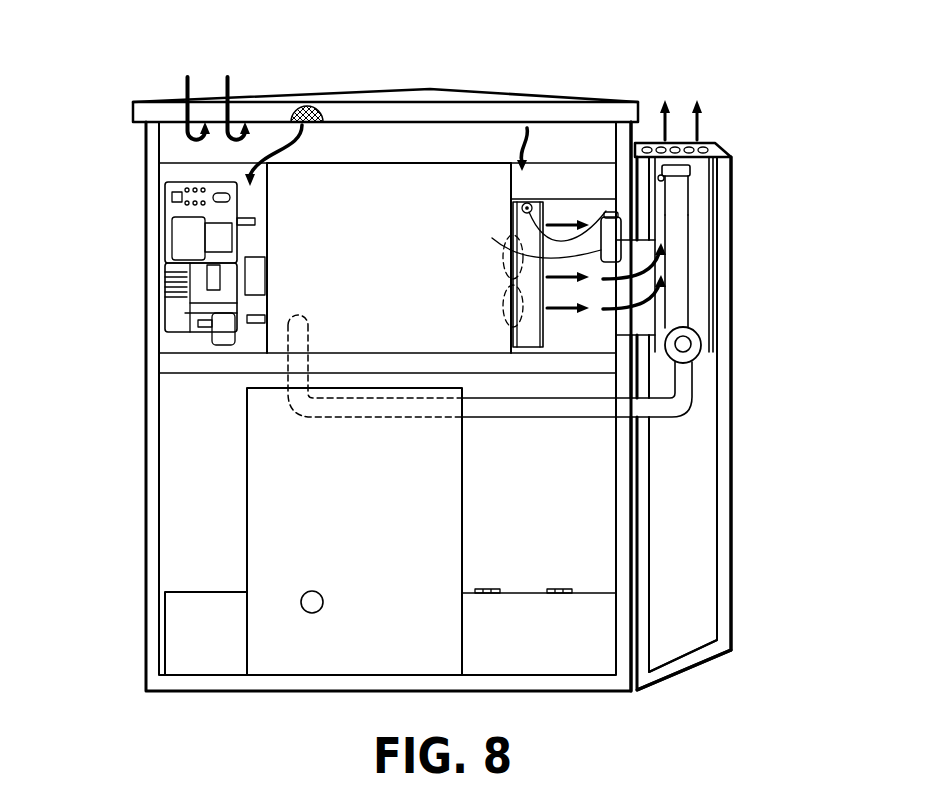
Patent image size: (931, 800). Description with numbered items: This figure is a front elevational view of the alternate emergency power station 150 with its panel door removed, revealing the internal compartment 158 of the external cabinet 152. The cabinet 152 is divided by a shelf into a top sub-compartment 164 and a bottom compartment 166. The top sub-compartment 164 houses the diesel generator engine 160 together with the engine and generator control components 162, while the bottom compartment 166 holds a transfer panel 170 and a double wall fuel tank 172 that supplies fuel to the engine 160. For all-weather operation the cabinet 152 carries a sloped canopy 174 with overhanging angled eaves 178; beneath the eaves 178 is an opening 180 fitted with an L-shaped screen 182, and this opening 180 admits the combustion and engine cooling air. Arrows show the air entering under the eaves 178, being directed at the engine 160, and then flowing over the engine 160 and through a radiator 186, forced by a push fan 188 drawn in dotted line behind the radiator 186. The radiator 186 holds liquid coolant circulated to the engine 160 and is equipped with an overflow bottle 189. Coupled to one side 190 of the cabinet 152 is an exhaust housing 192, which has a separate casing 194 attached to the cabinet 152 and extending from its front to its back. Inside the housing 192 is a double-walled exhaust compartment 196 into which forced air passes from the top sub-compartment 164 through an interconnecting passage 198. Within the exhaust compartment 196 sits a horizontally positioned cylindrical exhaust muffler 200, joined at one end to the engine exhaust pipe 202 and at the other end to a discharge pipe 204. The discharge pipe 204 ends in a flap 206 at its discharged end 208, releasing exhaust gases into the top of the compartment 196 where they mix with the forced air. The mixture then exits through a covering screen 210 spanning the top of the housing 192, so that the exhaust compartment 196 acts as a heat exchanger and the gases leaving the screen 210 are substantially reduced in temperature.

The emergency power station 150 is at (100, 153).
The external cabinet 152 is at (150, 410).
The internal compartment 158 is at (180, 540).
The diesel generator engine 160 is at (403, 295).
The engine and generator control components 162 is at (170, 213).
The top sub-compartment 164 is at (588, 178).
The bottom compartment 166 is at (555, 540).
The transfer panel 170 is at (245, 468).
The double wall fuel tank 172 is at (177, 622).
The sloped canopy 174 is at (497, 100).
The angled eaves 178 is at (133, 107).
The opening 180 is at (324, 130).
The L-shaped screen 182 is at (310, 108).
The radiator 186 is at (520, 204).
The push fan 188 is at (505, 297).
The overflow bottle 189 is at (505, 238).
The side of the cabinet 190 is at (637, 645).
The exhaust housing 192 is at (768, 500).
The separate casing 194 is at (732, 604).
The double-walled exhaust compartment 196 is at (700, 273).
The interconnecting passage 198 is at (640, 318).
The cylindrical exhaust muffler 200 is at (705, 345).
The engine exhaust pipe 202 is at (695, 408).
The discharge pipe 204 is at (690, 240).
The flap 206 is at (692, 170).
The discharged end 208 is at (690, 208).
The covering screen 210 is at (705, 150).